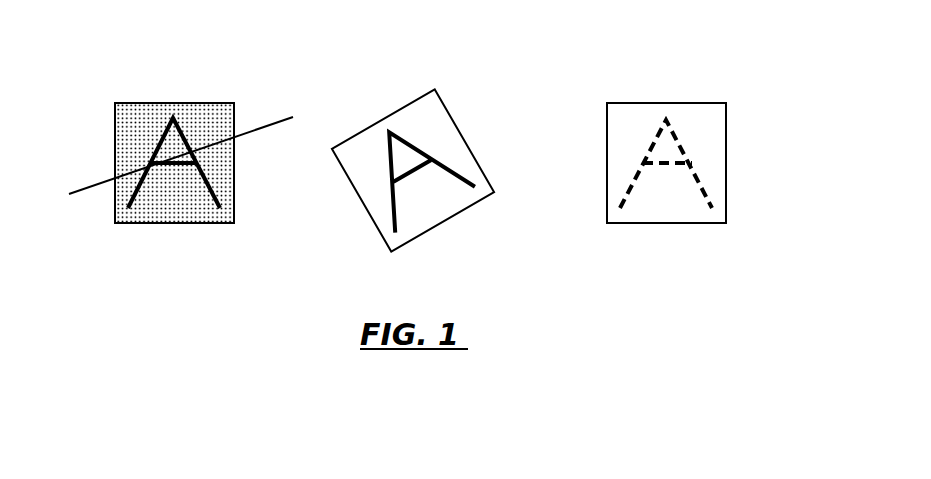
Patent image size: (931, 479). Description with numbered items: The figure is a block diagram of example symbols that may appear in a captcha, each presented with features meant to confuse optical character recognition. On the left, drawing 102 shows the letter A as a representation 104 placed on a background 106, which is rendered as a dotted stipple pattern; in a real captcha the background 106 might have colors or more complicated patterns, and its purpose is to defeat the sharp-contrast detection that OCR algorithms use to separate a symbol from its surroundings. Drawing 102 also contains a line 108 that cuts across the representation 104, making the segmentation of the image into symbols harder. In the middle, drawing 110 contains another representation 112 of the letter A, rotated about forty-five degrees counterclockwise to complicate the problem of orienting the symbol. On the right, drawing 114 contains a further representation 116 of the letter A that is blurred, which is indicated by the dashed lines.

The drawing 102 is at (160, 90).
The representation of the letter A 104 is at (189, 125).
The background 106 is at (190, 208).
The line 108 is at (85, 193).
The drawing 110 is at (413, 88).
The representation of the letter A 112 is at (435, 147).
The drawing 114 is at (637, 90).
The representation of the letter A 116 is at (650, 207).